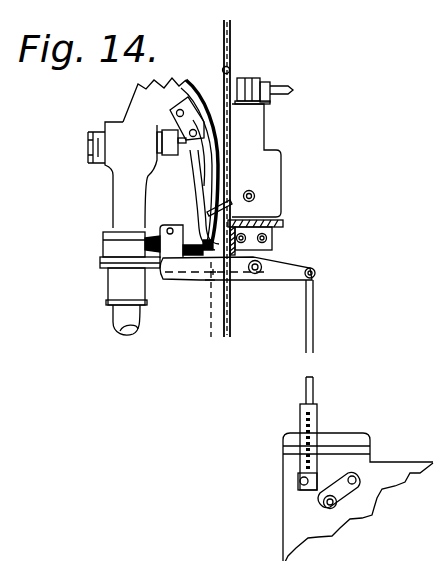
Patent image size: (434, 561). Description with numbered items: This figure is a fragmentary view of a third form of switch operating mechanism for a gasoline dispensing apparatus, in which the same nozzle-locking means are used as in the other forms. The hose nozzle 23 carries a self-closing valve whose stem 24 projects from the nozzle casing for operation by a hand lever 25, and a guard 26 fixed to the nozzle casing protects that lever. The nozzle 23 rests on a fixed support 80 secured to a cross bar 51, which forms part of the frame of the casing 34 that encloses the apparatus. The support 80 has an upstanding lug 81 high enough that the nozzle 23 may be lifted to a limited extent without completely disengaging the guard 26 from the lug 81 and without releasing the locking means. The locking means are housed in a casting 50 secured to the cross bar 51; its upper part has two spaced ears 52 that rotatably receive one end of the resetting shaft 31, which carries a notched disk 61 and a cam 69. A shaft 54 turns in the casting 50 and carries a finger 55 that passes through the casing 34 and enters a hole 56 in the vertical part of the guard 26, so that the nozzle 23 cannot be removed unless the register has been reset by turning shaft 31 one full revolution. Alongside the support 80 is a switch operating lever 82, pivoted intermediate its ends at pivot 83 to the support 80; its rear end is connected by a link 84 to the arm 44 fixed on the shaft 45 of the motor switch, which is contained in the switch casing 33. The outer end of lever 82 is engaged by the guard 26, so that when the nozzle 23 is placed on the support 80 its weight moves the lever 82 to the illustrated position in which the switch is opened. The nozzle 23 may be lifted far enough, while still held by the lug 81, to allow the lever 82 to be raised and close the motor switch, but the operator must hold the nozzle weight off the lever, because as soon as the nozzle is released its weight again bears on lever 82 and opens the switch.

The nozzle 23 is at (153, 160).
The valve stem 24 is at (178, 150).
The hand lever 25 is at (192, 182).
The guard 26 is at (210, 283).
The resetting shaft 31 is at (292, 85).
The switch casing 33 is at (374, 519).
The casing 34 is at (224, 28).
The switch arm 44 is at (318, 482).
The switch shaft 45 is at (328, 538).
The casting 50 is at (282, 171).
The cross bar 51 is at (284, 224).
The ears 52 is at (224, 70).
The shaft 54 is at (255, 196).
The finger 55 is at (200, 214).
The hole 56 is at (232, 205).
The disk 61 is at (238, 77).
The cam 69 is at (246, 78).
The fixed support 80 is at (199, 313).
The upstanding lug 81 is at (105, 232).
The switch operating lever 82 is at (243, 281).
The pivot 83 is at (256, 274).
The link 84 is at (313, 378).